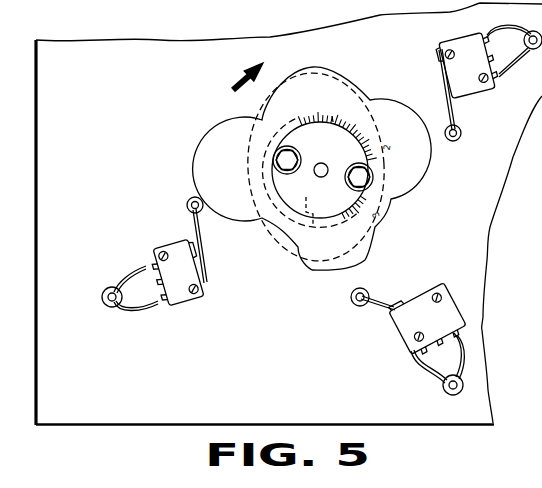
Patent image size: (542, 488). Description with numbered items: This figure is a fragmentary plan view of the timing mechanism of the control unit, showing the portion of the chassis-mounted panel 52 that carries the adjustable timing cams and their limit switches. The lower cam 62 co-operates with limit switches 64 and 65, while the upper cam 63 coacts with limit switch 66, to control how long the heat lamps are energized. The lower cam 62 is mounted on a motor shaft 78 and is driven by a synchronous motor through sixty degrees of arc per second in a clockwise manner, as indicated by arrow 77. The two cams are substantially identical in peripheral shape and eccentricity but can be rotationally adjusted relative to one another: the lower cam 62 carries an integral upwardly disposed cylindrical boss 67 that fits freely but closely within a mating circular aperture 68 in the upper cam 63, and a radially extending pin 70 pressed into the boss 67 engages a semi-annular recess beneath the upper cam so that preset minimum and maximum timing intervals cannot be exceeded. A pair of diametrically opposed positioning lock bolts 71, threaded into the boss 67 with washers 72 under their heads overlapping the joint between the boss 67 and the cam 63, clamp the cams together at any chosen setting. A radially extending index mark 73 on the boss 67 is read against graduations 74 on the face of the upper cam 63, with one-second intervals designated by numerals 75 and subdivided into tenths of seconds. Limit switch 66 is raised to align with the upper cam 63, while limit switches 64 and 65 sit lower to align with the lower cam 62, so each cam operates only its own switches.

The mounting plate 52 is at (290, 339).
The lower cam 62 is at (434, 152).
The upper cam 63 is at (241, 172).
The limit switch 64 is at (484, 74).
The limit switch 65 is at (189, 281).
The limit switch 66 is at (440, 323).
The cylindrical boss 67 is at (345, 206).
The circular aperture 68 is at (284, 131).
The radially extending pin 70 is at (308, 189).
The positioning lock bolts 71 is at (321, 167).
The washers 72 is at (365, 161).
The index mark 73 is at (333, 122).
The graduations 74 is at (335, 108).
The numerals 75 is at (335, 106).
The arrow 77 is at (232, 80).
The motor shaft 78 is at (318, 167).